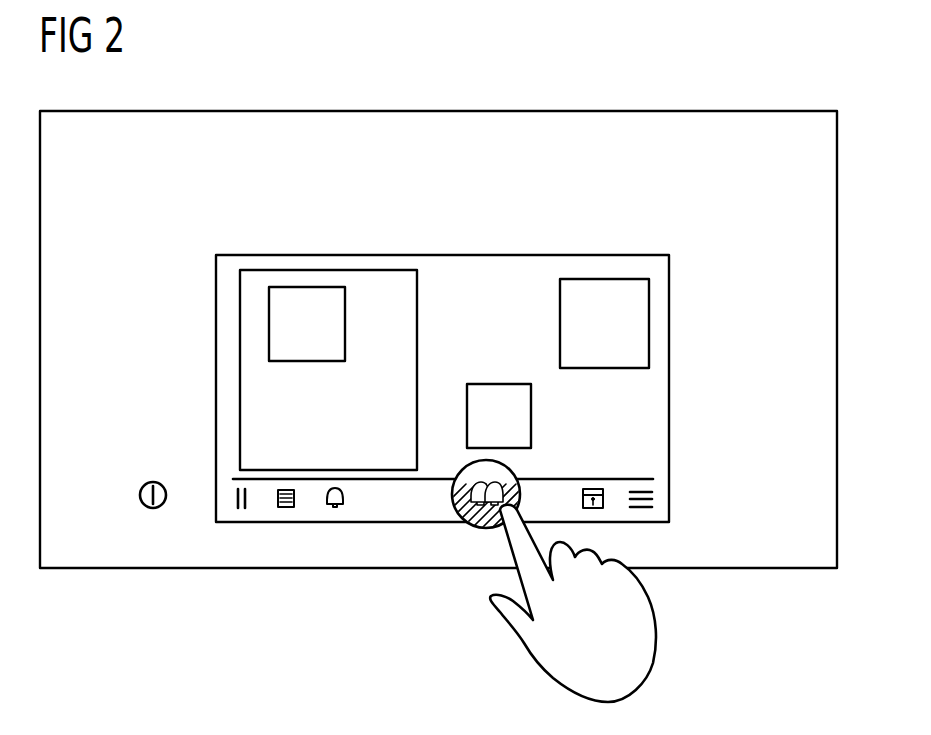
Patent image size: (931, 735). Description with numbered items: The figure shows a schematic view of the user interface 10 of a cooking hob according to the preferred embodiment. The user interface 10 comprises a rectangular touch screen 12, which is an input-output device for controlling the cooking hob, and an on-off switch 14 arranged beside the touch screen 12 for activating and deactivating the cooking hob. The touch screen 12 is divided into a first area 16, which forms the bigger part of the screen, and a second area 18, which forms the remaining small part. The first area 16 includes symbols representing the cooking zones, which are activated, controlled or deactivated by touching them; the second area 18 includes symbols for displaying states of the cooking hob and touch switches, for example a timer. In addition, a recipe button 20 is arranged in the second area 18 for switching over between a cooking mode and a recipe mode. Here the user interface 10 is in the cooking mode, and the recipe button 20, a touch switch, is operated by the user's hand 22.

The user interface 10 is at (596, 242).
The touch screen 12 is at (390, 255).
The on-off switch 14 is at (153, 508).
The first area 16 is at (497, 315).
The second area 18 is at (419, 505).
The recipe button 20 is at (480, 528).
The user's hand 22 is at (627, 628).